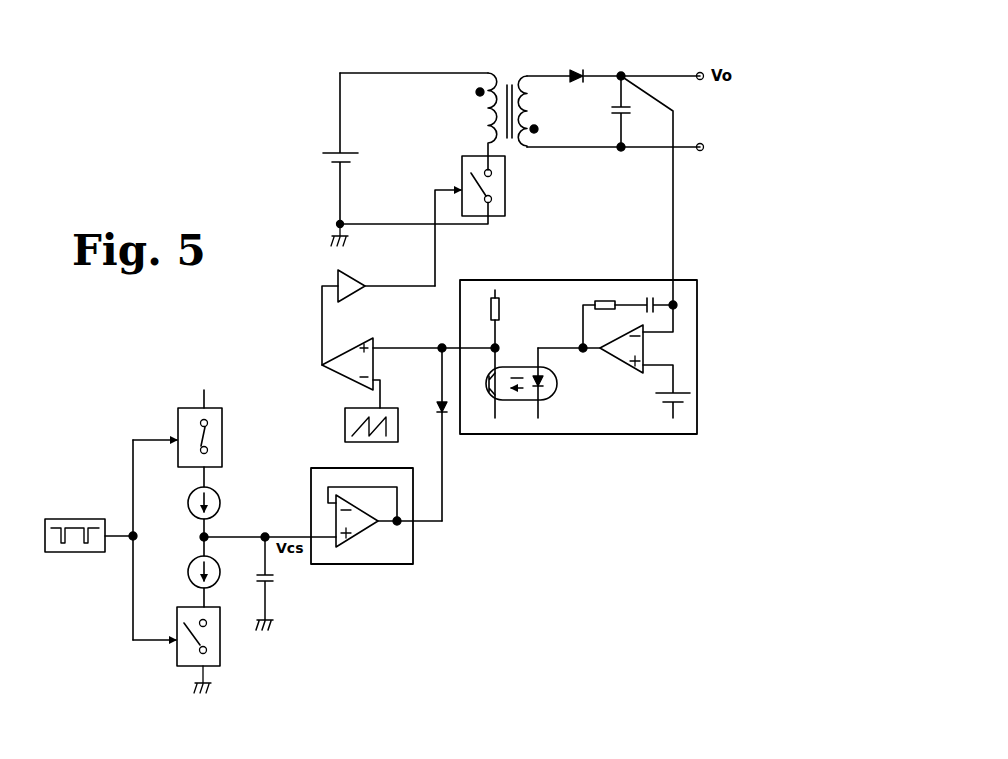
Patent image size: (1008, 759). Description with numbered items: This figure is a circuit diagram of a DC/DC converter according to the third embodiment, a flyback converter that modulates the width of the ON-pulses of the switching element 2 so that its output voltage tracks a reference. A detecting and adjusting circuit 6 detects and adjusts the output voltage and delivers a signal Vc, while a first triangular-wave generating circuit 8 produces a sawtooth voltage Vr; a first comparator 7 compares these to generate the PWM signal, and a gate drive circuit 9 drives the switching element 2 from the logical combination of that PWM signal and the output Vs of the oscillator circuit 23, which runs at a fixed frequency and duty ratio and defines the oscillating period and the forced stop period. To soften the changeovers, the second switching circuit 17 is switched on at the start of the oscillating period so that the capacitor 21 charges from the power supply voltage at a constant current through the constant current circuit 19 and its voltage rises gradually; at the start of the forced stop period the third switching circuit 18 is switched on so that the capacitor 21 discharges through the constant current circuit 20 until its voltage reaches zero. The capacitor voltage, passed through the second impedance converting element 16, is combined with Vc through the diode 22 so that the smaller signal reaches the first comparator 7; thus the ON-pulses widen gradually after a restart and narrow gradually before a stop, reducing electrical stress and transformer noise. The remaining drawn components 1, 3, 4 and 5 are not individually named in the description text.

The DC power source (battery) 1 is at (313, 160).
The switching element 2 is at (515, 210).
The transformer 3 is at (497, 67).
The rectifying diode 4 is at (578, 68).
The smoothing capacitor 5 is at (640, 113).
The detecting and adjusting circuit 6 is at (573, 445).
The first comparator 7 is at (328, 378).
The first triangular-wave generating circuit 8 is at (335, 425).
The gate drive circuit 9 is at (365, 293).
The second impedance converting element 16 is at (362, 573).
The second switching circuit 17 is at (232, 432).
The third switching circuit 18 is at (228, 660).
The constant current circuit 19 is at (232, 493).
The constant current circuit 20 is at (220, 590).
The capacitor 21 is at (282, 582).
The diode 22 is at (432, 405).
The oscillator circuit 23 is at (70, 560).